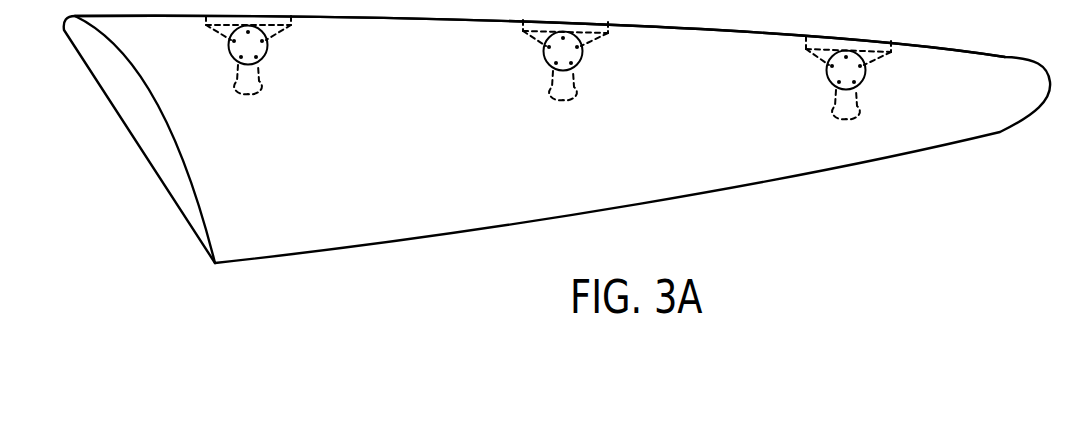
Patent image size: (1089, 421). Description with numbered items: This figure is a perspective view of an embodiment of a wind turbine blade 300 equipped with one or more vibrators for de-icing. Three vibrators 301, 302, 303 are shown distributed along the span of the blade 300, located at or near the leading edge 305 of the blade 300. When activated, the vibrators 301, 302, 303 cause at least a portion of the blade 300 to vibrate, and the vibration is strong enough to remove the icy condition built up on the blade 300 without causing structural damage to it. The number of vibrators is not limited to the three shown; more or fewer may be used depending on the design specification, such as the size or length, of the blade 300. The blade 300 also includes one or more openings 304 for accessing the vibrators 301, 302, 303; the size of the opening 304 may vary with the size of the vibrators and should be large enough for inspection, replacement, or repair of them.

The blade 300 is at (717, 163).
The vibrator 301 is at (338, 218).
The vibrator 302 is at (599, 56).
The vibrator 303 is at (878, 77).
The opening 304 is at (272, 96).
The leading edge 305 is at (420, 40).